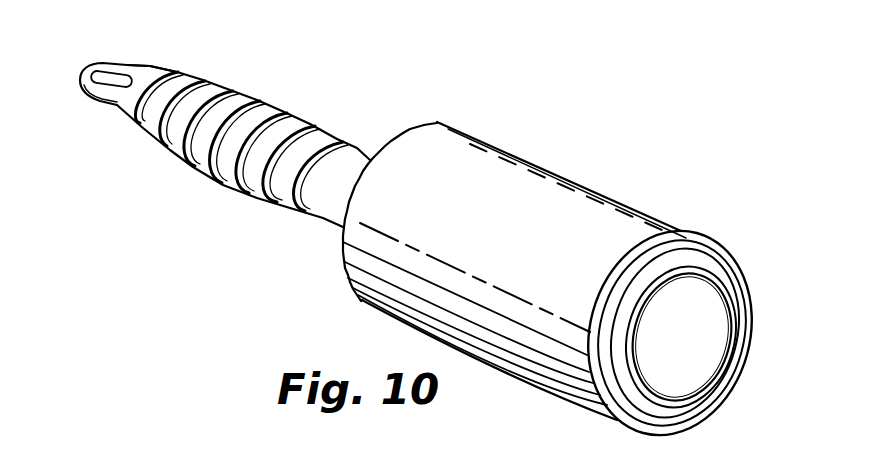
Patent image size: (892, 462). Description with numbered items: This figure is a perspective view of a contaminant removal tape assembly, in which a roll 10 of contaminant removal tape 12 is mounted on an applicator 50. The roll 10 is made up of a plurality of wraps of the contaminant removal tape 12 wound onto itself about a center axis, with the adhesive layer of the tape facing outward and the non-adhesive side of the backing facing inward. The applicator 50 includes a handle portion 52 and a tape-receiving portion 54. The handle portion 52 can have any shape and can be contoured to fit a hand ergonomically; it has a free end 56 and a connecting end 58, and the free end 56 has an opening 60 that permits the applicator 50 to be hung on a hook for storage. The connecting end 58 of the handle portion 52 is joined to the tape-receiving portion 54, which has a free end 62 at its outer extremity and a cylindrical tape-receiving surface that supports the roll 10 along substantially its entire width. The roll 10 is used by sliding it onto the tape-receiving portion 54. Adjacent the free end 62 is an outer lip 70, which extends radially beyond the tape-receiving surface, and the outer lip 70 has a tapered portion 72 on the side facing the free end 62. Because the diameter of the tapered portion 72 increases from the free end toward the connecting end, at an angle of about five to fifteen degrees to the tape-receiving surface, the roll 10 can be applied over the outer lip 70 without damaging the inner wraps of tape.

The roll 10 is at (567, 188).
The contaminant removal tape 12 is at (509, 322).
The applicator 50 is at (388, 123).
The handle portion 52 is at (177, 157).
The tape-receiving portion 54 is at (755, 327).
The free end 56 is at (150, 75).
The connecting end 58 is at (355, 162).
The opening 60 is at (107, 70).
The free end 62 is at (709, 267).
The outer lip 70 is at (622, 414).
The tapered portion 72 is at (682, 258).